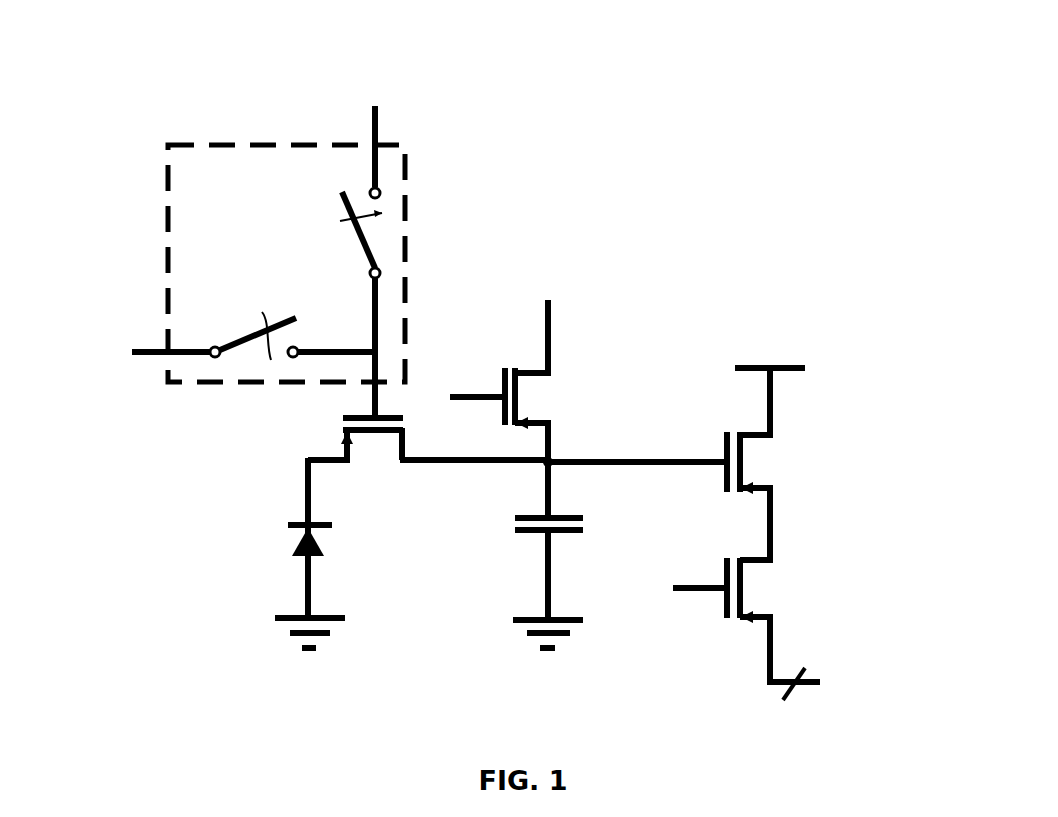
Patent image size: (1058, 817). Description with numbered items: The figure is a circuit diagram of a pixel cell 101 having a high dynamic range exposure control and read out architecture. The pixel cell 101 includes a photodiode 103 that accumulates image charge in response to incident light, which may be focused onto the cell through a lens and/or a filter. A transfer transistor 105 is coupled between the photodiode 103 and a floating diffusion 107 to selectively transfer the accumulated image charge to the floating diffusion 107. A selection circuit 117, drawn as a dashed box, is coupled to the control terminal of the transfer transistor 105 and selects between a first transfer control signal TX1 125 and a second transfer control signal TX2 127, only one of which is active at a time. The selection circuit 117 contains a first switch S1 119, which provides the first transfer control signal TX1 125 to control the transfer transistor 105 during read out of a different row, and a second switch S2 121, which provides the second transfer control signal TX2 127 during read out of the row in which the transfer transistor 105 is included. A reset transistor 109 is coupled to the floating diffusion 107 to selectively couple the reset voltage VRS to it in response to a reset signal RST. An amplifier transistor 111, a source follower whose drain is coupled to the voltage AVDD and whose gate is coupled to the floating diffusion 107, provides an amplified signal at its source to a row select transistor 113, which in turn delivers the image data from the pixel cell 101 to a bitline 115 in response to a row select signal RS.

The pixel cell 101 is at (869, 31).
The photodiode 103 is at (290, 545).
The transfer transistor 105 is at (372, 462).
The floating diffusion 107 is at (575, 504).
The reset transistor 109 is at (545, 395).
The amplifier transistor 111 is at (778, 461).
The row select transistor 113 is at (778, 589).
The bitline 115 is at (880, 645).
The selection circuit 117 is at (408, 166).
The first switch S1 119 is at (335, 198).
The second switch S2 121 is at (300, 335).
The first transfer control signal TX1 125 is at (424, 82).
The second transfer control signal TX2 127 is at (103, 310).